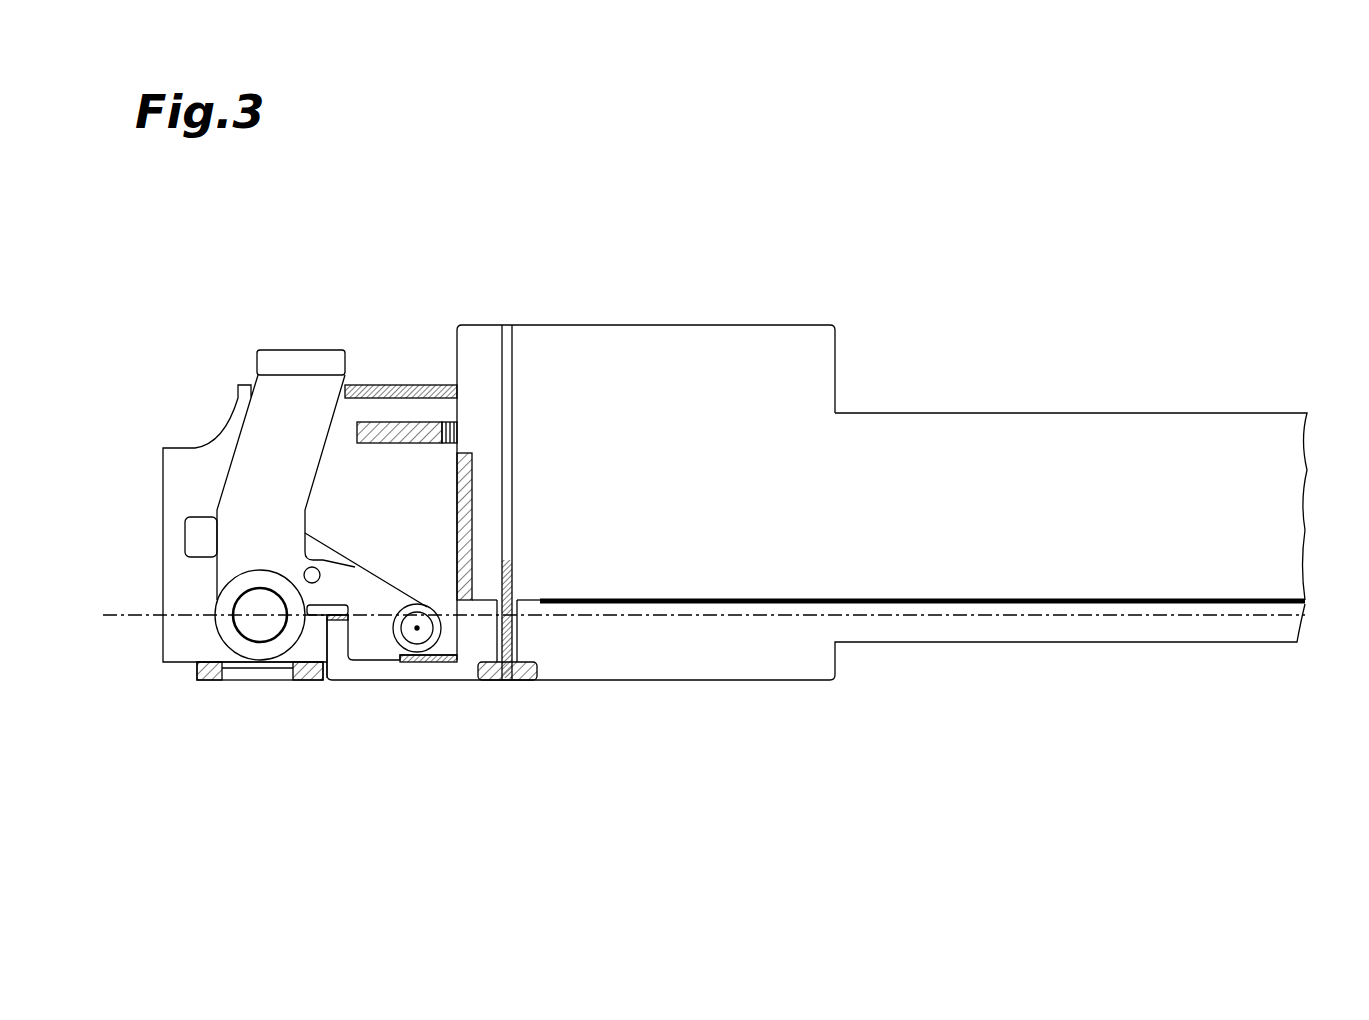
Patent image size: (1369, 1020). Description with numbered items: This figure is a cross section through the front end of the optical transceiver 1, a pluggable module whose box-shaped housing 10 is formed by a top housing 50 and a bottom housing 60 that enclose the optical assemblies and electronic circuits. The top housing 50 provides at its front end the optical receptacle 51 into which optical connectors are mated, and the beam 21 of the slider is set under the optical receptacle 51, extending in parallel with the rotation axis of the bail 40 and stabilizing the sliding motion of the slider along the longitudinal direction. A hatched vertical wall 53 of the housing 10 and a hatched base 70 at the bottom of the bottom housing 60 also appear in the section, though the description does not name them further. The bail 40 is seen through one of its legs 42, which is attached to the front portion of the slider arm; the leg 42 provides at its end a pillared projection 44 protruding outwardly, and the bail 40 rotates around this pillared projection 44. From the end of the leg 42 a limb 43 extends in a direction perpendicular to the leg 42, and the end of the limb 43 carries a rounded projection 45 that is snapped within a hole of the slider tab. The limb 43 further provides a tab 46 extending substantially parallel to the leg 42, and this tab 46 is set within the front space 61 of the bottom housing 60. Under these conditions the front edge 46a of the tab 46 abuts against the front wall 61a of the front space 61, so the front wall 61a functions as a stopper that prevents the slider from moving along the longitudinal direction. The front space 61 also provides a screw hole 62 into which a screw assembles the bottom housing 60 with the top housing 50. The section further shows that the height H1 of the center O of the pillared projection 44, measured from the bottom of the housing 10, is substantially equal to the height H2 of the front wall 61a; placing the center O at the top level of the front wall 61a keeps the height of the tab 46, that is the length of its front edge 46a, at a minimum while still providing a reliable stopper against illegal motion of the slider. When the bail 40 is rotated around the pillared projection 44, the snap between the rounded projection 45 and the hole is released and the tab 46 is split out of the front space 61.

The optical transceiver 1 is at (1070, 183).
The housing 10 is at (1122, 305).
The beam 21 is at (260, 682).
The bail 40 is at (300, 350).
The leg 42 is at (258, 433).
The limb 43 is at (355, 572).
The pillared projection 44 is at (258, 600).
The rounded projection 45 is at (418, 660).
The tab 46 is at (378, 662).
The front edge of tab 46a is at (346, 662).
The top housing 50 is at (1167, 410).
The optical receptacle 51 is at (400, 385).
The frame plate 53 is at (508, 325).
The bottom housing 60 is at (712, 682).
The front space 61 is at (448, 664).
The front wall 61a is at (358, 628).
The screw hole 62 is at (520, 634).
The base member 70 is at (499, 680).
The center of pillared projection O is at (262, 614).
The height of center of pillared projection H1 is at (113, 612).
The height of front wall H2 is at (127, 618).